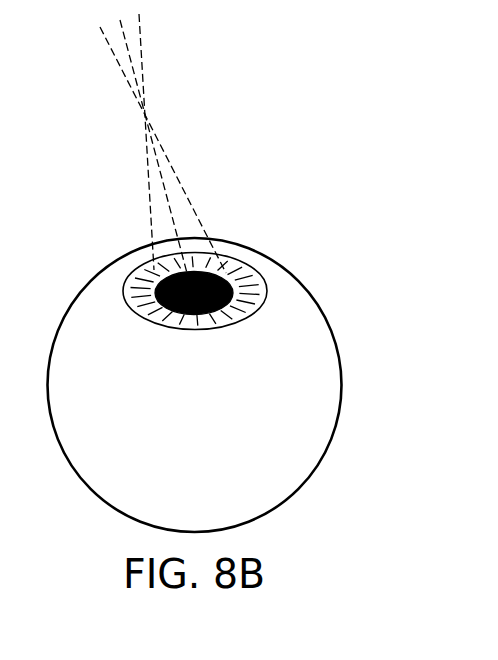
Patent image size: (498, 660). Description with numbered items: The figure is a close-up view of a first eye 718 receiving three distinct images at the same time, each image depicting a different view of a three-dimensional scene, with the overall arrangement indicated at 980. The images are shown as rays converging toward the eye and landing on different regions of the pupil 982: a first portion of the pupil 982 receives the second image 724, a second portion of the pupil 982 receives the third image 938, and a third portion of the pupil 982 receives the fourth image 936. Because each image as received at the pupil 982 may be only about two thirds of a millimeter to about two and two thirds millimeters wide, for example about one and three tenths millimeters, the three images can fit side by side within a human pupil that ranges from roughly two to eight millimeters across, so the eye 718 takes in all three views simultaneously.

The first eye 718 is at (308, 475).
The pupil 982 is at (124, 278).
The fourth image 936 is at (160, 142).
The second image 724 is at (148, 174).
The third image 938 is at (172, 218).
The eye imaging arrangement 980 is at (292, 70).